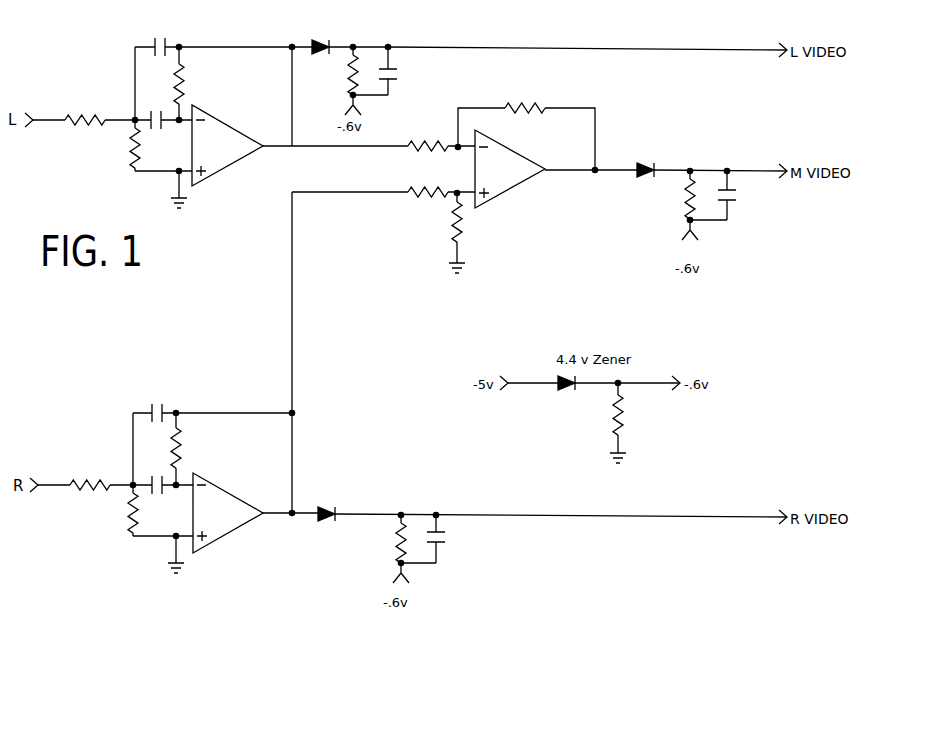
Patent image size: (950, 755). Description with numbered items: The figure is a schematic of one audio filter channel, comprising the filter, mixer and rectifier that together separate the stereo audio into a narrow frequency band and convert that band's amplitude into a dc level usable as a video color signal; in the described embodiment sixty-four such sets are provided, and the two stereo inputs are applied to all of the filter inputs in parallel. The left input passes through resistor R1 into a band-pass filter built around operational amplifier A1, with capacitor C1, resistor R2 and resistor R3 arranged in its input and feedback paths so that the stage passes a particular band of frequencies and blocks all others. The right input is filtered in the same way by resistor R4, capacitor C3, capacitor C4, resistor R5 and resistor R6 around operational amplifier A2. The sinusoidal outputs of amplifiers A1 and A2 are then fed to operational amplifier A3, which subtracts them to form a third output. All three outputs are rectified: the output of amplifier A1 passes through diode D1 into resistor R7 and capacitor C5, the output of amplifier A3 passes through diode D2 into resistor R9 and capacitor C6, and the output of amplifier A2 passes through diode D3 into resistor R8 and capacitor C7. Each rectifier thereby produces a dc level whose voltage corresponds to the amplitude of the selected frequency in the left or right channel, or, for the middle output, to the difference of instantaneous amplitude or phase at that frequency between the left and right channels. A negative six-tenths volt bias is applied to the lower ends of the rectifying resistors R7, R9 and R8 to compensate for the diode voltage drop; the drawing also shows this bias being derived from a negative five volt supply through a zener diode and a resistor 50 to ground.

The resistor R1 is at (85, 110).
The resistor R2 is at (188, 83).
The resistor R3 is at (123, 145).
The capacitor C1 is at (156, 37).
The operational amplifier A1 is at (227, 145).
The diode D1 is at (319, 37).
The resistor R7 is at (342, 71).
The capacitor C5 is at (400, 71).
The operational amplifier A3 is at (510, 169).
The diode D2 is at (642, 160).
The resistor R9 is at (677, 195).
The capacitor C6 is at (738, 195).
The zener bias resistor 50 is at (630, 418).
The resistor R4 is at (90, 477).
The resistor R5 is at (186, 449).
The resistor R6 is at (120, 510).
The capacitor C3 is at (153, 404).
The capacitor C4 is at (152, 477).
The operational amplifier A2 is at (228, 513).
The diode D3 is at (327, 504).
The resistor R8 is at (388, 539).
The capacitor C7 is at (447, 539).